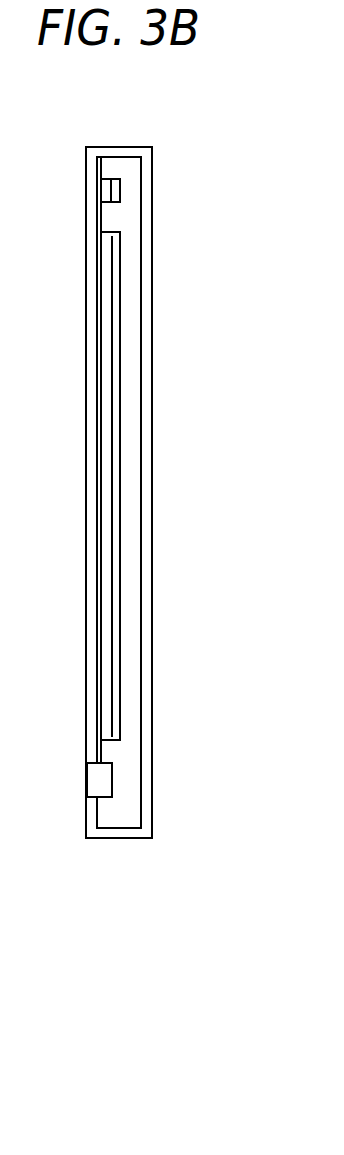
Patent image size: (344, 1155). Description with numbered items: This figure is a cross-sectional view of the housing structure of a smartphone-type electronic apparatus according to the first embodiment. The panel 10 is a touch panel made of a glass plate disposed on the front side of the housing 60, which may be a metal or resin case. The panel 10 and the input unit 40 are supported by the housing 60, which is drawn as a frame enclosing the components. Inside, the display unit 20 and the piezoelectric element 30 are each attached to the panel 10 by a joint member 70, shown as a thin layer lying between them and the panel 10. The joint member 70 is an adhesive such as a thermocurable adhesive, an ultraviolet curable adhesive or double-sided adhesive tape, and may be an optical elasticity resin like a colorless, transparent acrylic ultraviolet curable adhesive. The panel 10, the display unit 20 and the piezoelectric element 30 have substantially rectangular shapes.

The panel 10 is at (86, 211).
The display unit 20 is at (112, 335).
The piezoelectric element 30 is at (112, 179).
The input unit 40 is at (96, 781).
The housing 60 is at (151, 195).
The joint member 70 is at (104, 179).